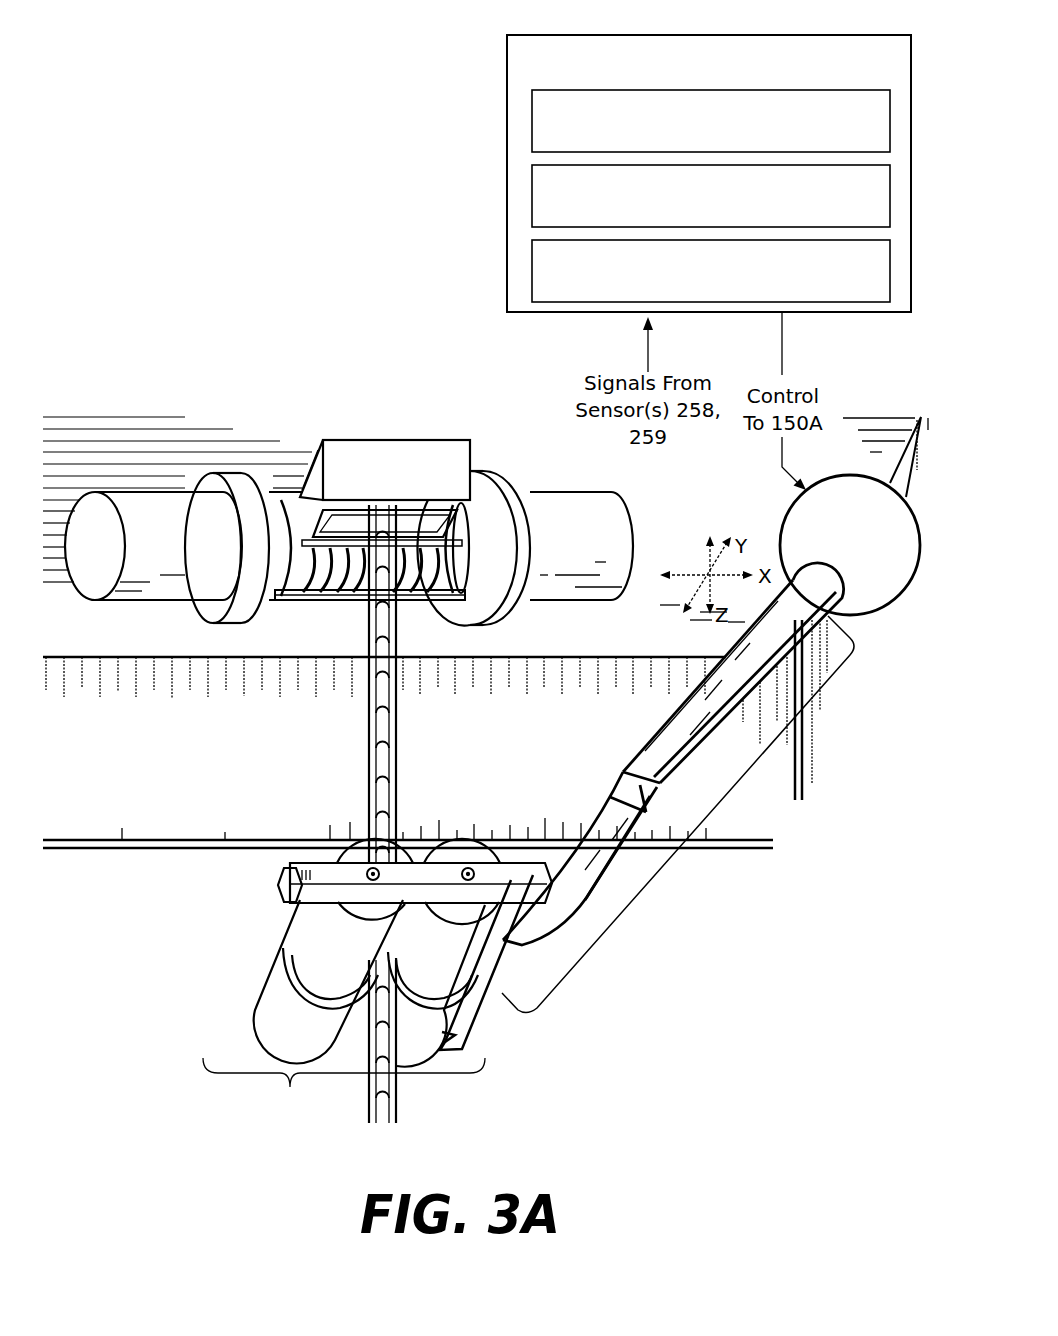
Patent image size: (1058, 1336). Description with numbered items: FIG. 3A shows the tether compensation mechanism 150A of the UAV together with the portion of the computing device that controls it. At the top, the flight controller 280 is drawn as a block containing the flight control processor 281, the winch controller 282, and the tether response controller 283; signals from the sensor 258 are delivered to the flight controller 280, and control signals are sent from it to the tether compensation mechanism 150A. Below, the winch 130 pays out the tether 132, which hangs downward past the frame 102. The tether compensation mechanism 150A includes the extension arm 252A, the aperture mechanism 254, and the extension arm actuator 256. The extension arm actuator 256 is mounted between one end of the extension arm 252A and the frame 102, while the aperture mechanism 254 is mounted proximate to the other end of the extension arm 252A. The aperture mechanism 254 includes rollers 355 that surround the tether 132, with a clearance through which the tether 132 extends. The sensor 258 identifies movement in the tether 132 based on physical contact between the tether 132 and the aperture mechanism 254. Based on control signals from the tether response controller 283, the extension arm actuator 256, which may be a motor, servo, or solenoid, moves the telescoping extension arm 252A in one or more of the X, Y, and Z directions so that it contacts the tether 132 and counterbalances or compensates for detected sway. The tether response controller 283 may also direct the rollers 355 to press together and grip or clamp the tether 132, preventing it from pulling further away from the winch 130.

The flight controller 280 is at (709, 173).
The flight control processor 281 is at (711, 121).
The winch controller 282 is at (711, 196).
The tether response controller 283 is at (711, 271).
The winch 130 is at (612, 532).
The tether 132 is at (373, 727).
The frame 102 is at (120, 845).
The rollers 355 is at (374, 979).
The aperture mechanism 254 is at (351, 979).
The sensor 258 is at (278, 882).
The extension arm 252A is at (686, 850).
The tether compensation mechanism 150A is at (712, 959).
The extension arm actuator 256 is at (884, 531).